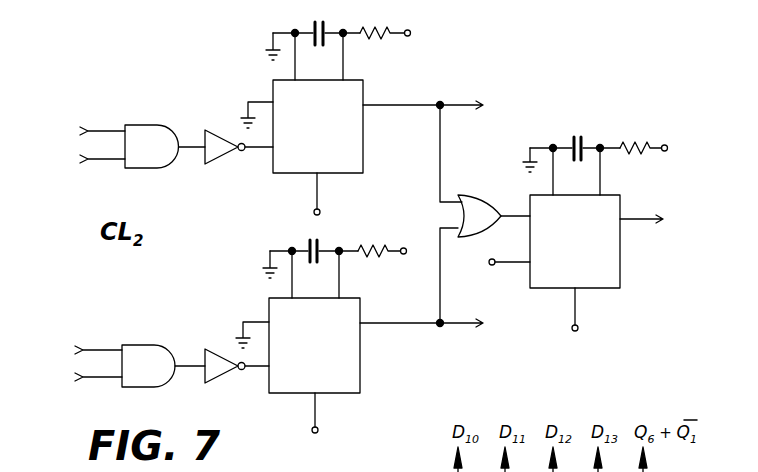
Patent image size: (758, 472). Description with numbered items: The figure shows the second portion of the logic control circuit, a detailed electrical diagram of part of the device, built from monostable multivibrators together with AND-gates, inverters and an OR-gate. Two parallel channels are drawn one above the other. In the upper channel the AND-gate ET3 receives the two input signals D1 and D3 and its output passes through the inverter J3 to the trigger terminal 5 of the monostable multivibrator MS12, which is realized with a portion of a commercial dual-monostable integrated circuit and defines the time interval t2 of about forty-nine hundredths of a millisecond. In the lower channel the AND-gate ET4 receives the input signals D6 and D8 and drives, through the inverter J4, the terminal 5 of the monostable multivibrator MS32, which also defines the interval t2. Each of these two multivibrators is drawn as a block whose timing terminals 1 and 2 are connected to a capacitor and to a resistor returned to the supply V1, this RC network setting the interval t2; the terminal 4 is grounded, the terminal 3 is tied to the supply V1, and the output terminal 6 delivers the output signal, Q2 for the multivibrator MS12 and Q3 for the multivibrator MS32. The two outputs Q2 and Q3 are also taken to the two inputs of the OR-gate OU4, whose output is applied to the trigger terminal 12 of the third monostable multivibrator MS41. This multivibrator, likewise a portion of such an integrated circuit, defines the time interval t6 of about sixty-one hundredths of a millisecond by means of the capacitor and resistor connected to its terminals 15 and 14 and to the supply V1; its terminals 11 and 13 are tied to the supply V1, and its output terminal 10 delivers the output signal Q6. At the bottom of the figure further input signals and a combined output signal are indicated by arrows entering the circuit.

The AND-gate ET3 is at (142, 124).
The AND-gate ET4 is at (136, 344).
The inverter J3 is at (216, 130).
The inverter J4 is at (215, 349).
The monostable multivibrator MS12 is at (352, 152).
The monostable multivibrator MS32 is at (352, 363).
The monostable multivibrator MS41 is at (620, 268).
The OR-gate OU4 is at (476, 197).
The time interval t2 is at (348, 141).
The time interval t6 is at (607, 145).
The supply voltage terminal V1 is at (423, 37).
The input signal D1 is at (86, 134).
The input signal D3 is at (86, 162).
The input signal D6 is at (84, 353).
The input signal D8 is at (84, 380).
The output signal Q2 is at (473, 109).
The output signal Q3 is at (473, 327).
The output signal Q6 is at (679, 224).
The monostable pin 1 is at (295, 63).
The monostable pin 2 is at (342, 63).
The input terminal 3 is at (307, 188).
The monostable pin 4 is at (263, 113).
The monostable pin 5 is at (281, 148).
The monostable pin 6 is at (416, 106).
The monostable pin 10 is at (633, 220).
The monostable pin 11 is at (507, 265).
The monostable pin 12 is at (540, 220).
The input terminal 13 is at (585, 308).
The monostable pin 14 is at (600, 178).
The monostable pin 15 is at (553, 178).